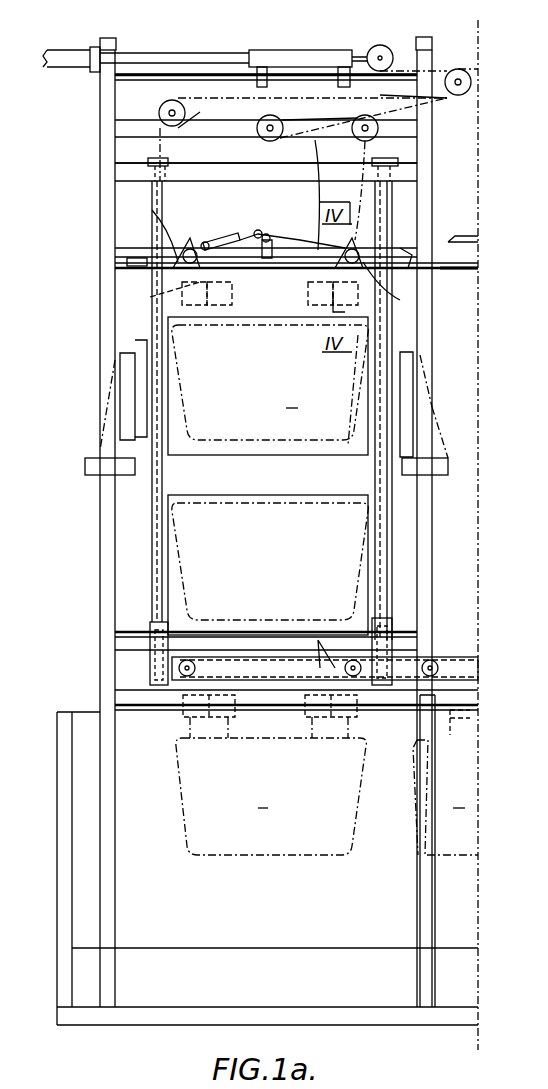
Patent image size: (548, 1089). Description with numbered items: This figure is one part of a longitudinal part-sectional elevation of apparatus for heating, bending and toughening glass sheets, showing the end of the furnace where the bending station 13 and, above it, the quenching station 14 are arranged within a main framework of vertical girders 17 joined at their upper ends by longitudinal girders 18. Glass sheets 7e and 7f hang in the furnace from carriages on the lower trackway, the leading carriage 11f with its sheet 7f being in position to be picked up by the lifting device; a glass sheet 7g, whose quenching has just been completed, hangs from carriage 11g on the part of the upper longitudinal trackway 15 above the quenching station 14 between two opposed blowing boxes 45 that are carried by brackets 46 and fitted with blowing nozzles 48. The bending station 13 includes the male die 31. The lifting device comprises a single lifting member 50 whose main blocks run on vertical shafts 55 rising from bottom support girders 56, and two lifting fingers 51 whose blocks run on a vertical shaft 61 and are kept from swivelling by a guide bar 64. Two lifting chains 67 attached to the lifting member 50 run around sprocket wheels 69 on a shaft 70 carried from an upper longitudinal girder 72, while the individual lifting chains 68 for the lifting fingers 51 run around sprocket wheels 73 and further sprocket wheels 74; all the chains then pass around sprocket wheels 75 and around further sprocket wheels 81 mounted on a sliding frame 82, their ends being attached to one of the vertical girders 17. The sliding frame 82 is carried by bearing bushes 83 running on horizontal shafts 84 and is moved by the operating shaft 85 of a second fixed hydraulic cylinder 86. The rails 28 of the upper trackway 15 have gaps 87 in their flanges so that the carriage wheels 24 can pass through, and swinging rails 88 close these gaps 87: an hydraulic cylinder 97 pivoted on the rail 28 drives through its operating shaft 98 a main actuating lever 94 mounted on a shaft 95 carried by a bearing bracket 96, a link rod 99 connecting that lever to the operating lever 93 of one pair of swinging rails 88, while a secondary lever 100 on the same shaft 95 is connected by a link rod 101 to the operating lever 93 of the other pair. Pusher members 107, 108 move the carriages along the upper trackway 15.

The glass sheet 7e is at (445, 782).
The glass sheet 7f is at (271, 786).
The glass sheet 7g is at (270, 382).
The carriage 11f is at (320, 668).
The carriage 11g is at (304, 342).
The bending station 13 is at (340, 556).
The quenching station 14 is at (348, 372).
The upper longitudinal trackway 15 is at (448, 270).
The vertical girders 17 is at (424, 38).
The longitudinal girders 18 is at (208, 173).
The wheels 24 is at (440, 668).
The rails 28 is at (408, 272).
The male die 31 is at (257, 530).
The blowing boxes 45 is at (357, 440).
The brackets 46 is at (95, 458).
The blowing nozzles 48 is at (225, 380).
The lifting member 50 is at (150, 628).
The lifting fingers 51 is at (395, 628).
The vertical shafts 55 is at (157, 574).
The bottom support girders 56 is at (132, 712).
The vertical shaft 61 is at (380, 572).
The guide bar 64 is at (387, 592).
The lifting chains 67 is at (152, 550).
The individual lifting chains 68 is at (385, 512).
The sprocket wheels 69 is at (162, 106).
The shaft 70 is at (144, 154).
The upper longitudinal girder 72 is at (195, 128).
The sprocket wheels 73 is at (370, 136).
The sprocket wheels 74 is at (264, 141).
The sprocket wheels 75 is at (460, 69).
The sprocket wheels 81 is at (380, 46).
The sliding frame 82 is at (310, 52).
The bearing bushes 83 is at (262, 67).
The horizontal shafts 84 is at (220, 77).
The operating shaft 85 is at (165, 53).
The second fixed hydraulic cylinder 86 is at (70, 57).
The gaps 87 is at (160, 215).
The swinging rails 88 is at (180, 245).
The operating lever 93 is at (355, 177).
The main actuating lever 94 is at (268, 262).
The shaft 95 is at (303, 262).
The bearing bracket 96 is at (272, 240).
The hydraulic cylinder 97 is at (218, 237).
The operating shaft 98 is at (249, 226).
The link rod 99 is at (159, 296).
The secondary lever 100 is at (268, 236).
The link rod 101 is at (304, 195).
The pusher member 107 is at (130, 258).
The pusher member 108 is at (462, 240).